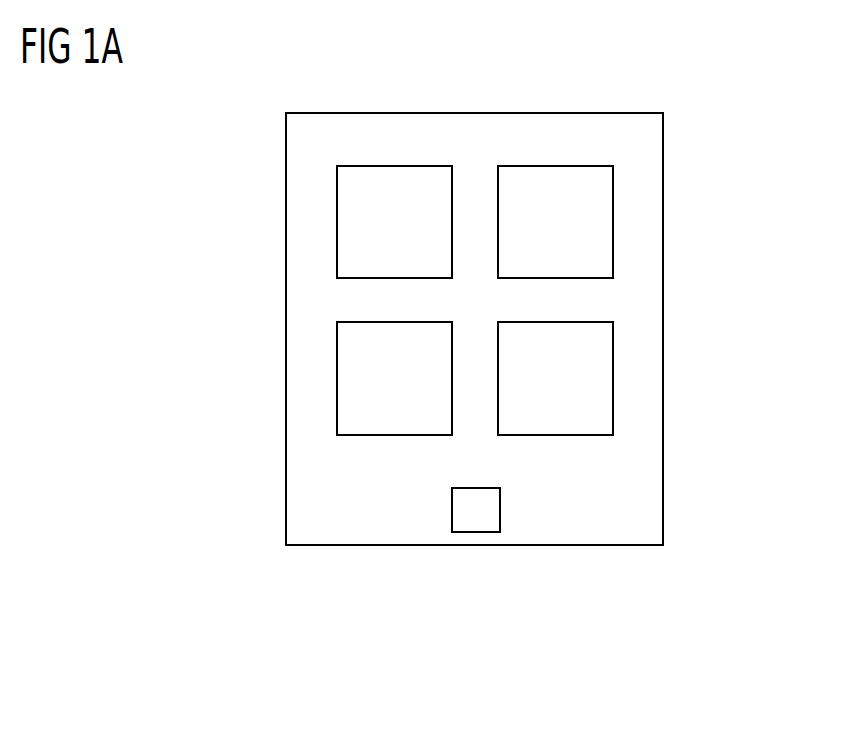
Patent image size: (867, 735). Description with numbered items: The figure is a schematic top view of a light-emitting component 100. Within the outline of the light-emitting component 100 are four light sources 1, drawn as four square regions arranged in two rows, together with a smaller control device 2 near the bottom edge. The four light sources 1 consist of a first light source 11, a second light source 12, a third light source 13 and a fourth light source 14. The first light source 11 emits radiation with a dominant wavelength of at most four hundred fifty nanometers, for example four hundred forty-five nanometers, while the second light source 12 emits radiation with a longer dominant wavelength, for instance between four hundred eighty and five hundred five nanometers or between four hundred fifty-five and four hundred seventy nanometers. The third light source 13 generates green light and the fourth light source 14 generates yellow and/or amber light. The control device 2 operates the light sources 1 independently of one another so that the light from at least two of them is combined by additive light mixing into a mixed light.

The light-emitting component 100 is at (665, 140).
The light sources 1 is at (218, 214).
The first light source 11 is at (348, 228).
The second light source 12 is at (598, 225).
The third light source 13 is at (348, 385).
The fourth light source 14 is at (598, 385).
The control device 2 is at (490, 504).